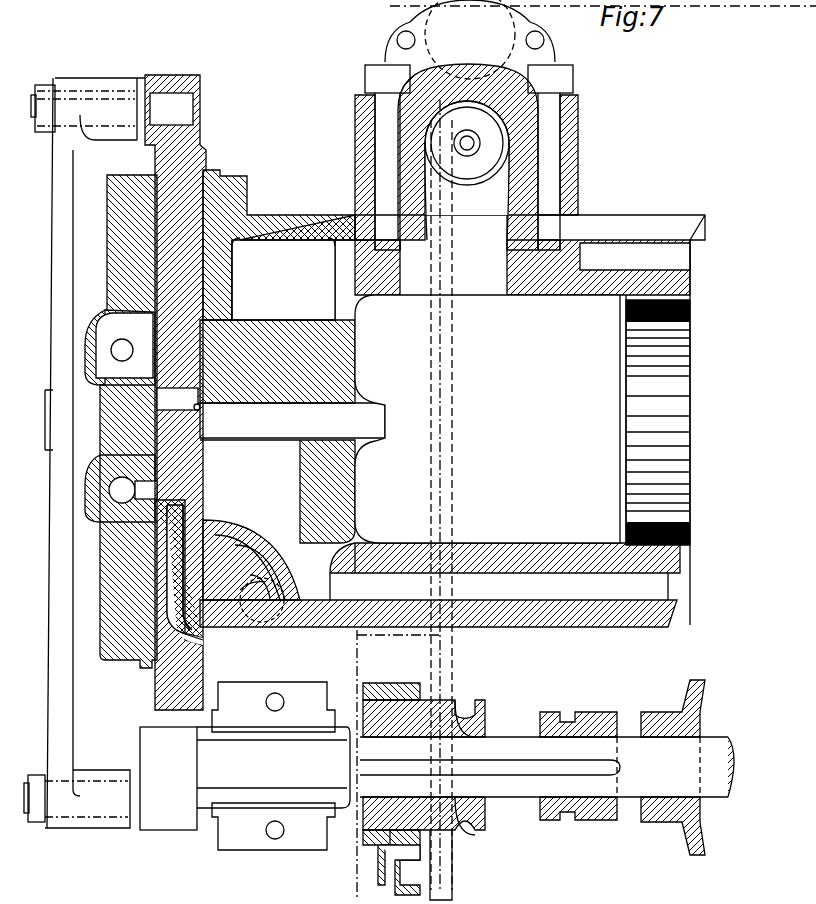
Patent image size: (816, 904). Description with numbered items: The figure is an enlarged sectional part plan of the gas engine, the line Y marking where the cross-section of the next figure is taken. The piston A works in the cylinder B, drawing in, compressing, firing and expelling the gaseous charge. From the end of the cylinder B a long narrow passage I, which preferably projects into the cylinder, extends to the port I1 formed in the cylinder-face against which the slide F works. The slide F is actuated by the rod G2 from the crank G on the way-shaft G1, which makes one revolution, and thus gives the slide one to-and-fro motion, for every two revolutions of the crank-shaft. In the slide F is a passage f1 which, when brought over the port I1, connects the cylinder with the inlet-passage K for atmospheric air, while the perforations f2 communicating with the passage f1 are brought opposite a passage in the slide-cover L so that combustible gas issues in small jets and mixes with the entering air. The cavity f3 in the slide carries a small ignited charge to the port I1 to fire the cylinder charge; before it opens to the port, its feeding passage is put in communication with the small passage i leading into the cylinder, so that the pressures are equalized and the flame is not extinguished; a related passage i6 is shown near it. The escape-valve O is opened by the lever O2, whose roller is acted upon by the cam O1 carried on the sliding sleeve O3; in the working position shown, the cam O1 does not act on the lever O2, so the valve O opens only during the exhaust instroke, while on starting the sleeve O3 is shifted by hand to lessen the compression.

The section line Y Y is at (455, 12).
The escape-valve O is at (583, 430).
The cylinder B is at (452, 421).
The piston A is at (658, 422).
The passage I is at (292, 420).
The port I1 is at (232, 420).
The cavity f3 is at (178, 399).
The slide F is at (175, 392).
The passage i6 is at (120, 347).
The small passage i is at (121, 488).
The rod G2 is at (84, 453).
The slide-cover L is at (121, 421).
The passage f1 is at (179, 572).
The perforations f2 is at (165, 580).
The inlet-passage K is at (277, 396).
The cam O1 is at (391, 785).
The lever O2 is at (412, 500).
The sliding sleeve O3 is at (424, 800).
The crank G is at (245, 766).
The way-shaft G1 is at (547, 767).